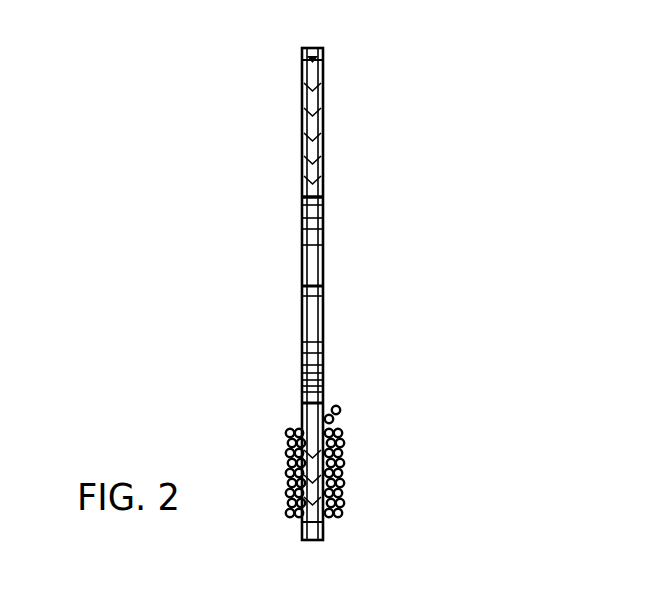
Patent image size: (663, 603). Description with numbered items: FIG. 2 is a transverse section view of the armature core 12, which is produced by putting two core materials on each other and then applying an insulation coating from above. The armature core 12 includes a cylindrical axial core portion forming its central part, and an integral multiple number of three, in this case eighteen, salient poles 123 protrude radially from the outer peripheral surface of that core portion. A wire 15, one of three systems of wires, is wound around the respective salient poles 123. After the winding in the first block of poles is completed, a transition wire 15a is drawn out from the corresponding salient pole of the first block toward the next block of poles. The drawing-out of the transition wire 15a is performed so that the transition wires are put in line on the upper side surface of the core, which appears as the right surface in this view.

The armature core 12 is at (292, 128).
The salient pole 123 is at (312, 48).
The transition wire 15a is at (341, 406).
The wire 15 is at (341, 440).